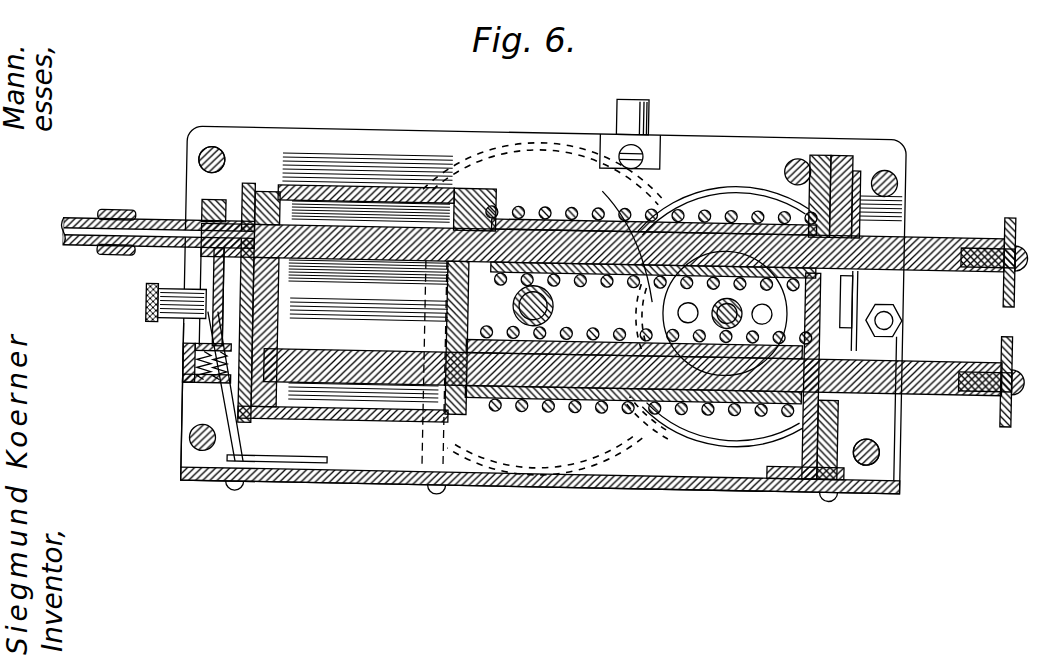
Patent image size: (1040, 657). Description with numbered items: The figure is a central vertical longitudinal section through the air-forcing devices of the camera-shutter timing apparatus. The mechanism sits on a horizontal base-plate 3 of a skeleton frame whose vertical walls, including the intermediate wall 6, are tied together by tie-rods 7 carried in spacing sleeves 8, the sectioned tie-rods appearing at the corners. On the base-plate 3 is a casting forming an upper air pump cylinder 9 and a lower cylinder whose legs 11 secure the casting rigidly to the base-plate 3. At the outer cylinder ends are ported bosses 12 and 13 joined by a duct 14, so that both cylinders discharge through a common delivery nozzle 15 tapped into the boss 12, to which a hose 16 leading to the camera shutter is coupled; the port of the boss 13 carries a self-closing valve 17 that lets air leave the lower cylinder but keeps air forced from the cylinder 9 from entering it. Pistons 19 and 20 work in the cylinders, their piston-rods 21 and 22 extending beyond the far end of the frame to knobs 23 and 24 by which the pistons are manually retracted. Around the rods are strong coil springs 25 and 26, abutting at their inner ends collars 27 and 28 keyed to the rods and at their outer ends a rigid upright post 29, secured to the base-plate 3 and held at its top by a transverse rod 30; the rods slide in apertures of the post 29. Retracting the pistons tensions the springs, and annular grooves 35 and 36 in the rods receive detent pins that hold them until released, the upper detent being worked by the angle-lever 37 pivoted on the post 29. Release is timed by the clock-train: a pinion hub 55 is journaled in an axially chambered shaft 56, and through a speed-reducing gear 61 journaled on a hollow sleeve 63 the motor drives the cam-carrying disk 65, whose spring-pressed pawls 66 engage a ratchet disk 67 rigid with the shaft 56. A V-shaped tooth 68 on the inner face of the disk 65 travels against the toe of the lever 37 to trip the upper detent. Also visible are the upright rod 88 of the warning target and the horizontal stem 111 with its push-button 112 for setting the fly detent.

The base-plate 3 is at (500, 483).
The intermediate wall 6 is at (302, 137).
The tie-rods 7 is at (197, 162).
The spacing sleeves 8 is at (222, 156).
The upper air pump cylinder 9 is at (340, 189).
The legs 11 is at (256, 444).
The ported boss 12 is at (232, 196).
The ported boss 13 is at (205, 388).
The duct 14 is at (200, 280).
The delivery nozzle 15 is at (160, 229).
The hose 16 is at (96, 227).
The self-closing valve 17 is at (196, 366).
The piston 19 is at (300, 193).
The piston 20 is at (247, 470).
The piston-rod 21 is at (365, 233).
The piston-rod 22 is at (343, 390).
The knob 23 is at (1005, 208).
The knob 24 is at (1006, 421).
The coil spring 25 is at (680, 226).
The coil spring 26 is at (700, 330).
The collar 27 is at (473, 196).
The collar 28 is at (460, 412).
The upright post 29 is at (822, 149).
The transverse rod 30 is at (792, 156).
The annular groove 35 is at (678, 307).
The annular groove 36 is at (660, 330).
The angle-lever 37 is at (858, 315).
The elongated hub 55 is at (742, 318).
The axially chambered shaft 56 is at (764, 304).
The speed-reducing gear 61 is at (565, 148).
The hollow shaft or sleeve 63 is at (553, 306).
The cam-carrying disk 65 is at (712, 186).
The spring-pressed pawl 66 is at (650, 206).
The ratchet disk 67 is at (736, 208).
The V-shaped tooth 68 is at (853, 280).
The upright rod or tube 88 is at (620, 100).
The horizontal stem 111 is at (175, 326).
The push-button 112 is at (147, 309).